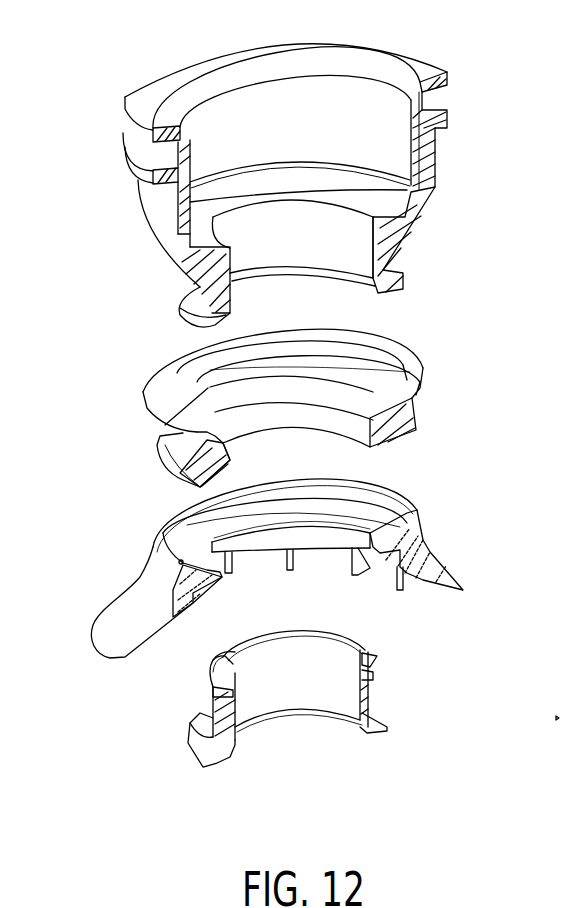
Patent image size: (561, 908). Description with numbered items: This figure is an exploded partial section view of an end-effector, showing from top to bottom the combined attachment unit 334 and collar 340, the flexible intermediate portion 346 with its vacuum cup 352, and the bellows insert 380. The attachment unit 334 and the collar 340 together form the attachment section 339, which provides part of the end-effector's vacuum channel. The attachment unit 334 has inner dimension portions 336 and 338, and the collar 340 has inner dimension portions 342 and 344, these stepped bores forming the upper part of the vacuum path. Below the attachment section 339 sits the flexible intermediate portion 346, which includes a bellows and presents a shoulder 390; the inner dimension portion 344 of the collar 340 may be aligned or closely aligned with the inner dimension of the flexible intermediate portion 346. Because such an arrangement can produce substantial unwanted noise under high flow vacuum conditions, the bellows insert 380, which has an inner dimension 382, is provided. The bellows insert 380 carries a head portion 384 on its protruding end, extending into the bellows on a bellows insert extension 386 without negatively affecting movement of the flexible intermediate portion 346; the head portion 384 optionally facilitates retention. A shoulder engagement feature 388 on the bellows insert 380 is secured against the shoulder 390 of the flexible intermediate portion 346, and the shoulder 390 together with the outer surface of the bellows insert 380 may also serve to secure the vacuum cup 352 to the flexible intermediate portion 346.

The attachment unit 334 is at (447, 76).
The inner dimension portion 336 is at (300, 68).
The inner dimension portion 338 is at (286, 131).
The attachment section 339 is at (110, 75).
The collar 340 is at (402, 237).
The inner dimension portion 342 is at (393, 193).
The inner dimension portion 344 is at (286, 247).
The flexible intermediate portion 346 is at (117, 335).
The vacuum cup 352 is at (90, 503).
The bellows insert 380 is at (223, 757).
The inner dimension 382 is at (313, 688).
The head portion 384 is at (210, 660).
The bellows insert extension 386 is at (378, 718).
The shoulder engagement feature 388 is at (212, 690).
The shoulder 390 is at (303, 395).